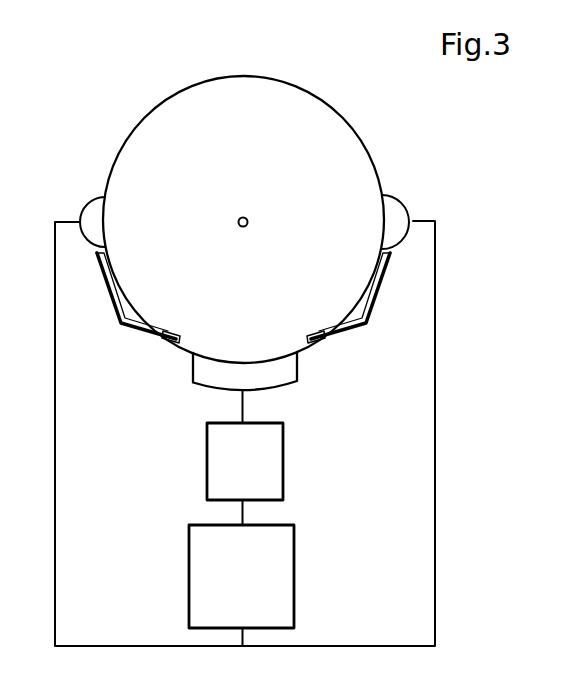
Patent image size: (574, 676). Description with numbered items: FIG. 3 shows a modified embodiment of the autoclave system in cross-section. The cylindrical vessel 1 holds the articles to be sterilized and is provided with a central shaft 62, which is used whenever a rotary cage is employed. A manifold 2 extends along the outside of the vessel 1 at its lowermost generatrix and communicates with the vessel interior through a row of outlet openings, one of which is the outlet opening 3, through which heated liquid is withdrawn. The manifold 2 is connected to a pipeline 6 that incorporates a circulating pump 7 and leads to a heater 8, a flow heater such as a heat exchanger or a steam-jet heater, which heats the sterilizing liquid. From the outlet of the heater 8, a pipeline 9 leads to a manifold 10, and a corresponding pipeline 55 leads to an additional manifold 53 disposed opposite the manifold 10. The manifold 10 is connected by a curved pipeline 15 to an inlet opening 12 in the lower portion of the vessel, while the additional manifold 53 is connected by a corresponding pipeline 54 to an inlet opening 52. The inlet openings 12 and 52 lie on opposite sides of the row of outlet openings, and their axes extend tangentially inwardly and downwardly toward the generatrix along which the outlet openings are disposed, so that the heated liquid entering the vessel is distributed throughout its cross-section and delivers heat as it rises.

The vessel 1 is at (295, 105).
The manifold 2 is at (204, 381).
The outlet opening 3 is at (242, 360).
The pipeline 6 is at (245, 410).
The circulating pump 7 is at (276, 472).
The heater 8 is at (288, 566).
The pipeline 9 is at (437, 445).
The manifold 10 is at (400, 213).
The inlet opening 12 is at (309, 334).
The curved pipeline 15 is at (373, 301).
The inlet opening 52 is at (168, 330).
The additional manifold 53 is at (88, 214).
The pipeline 54 is at (111, 289).
The pipeline 55 is at (55, 543).
The central shaft 62 is at (247, 225).